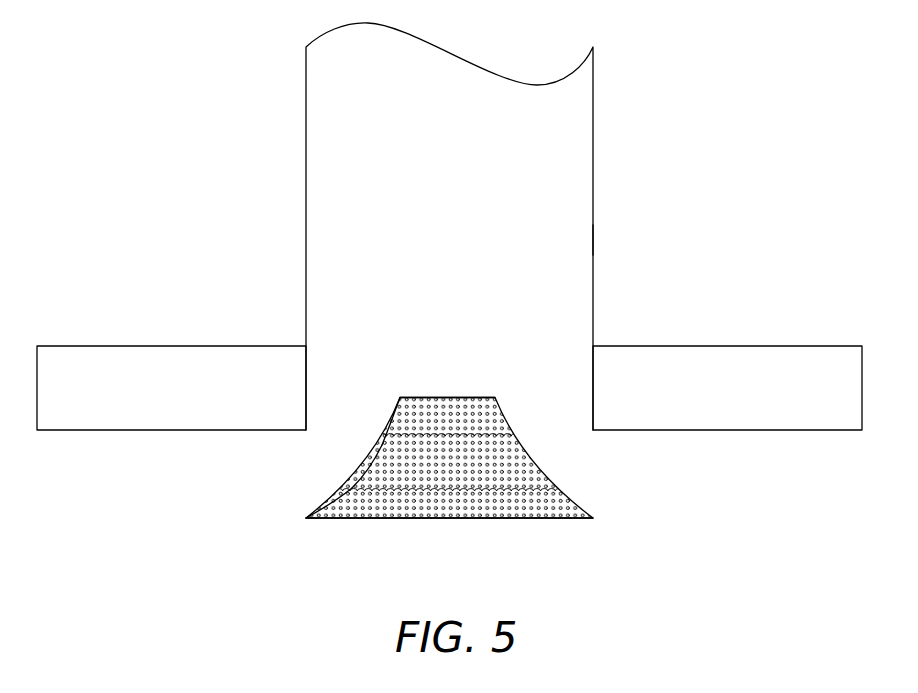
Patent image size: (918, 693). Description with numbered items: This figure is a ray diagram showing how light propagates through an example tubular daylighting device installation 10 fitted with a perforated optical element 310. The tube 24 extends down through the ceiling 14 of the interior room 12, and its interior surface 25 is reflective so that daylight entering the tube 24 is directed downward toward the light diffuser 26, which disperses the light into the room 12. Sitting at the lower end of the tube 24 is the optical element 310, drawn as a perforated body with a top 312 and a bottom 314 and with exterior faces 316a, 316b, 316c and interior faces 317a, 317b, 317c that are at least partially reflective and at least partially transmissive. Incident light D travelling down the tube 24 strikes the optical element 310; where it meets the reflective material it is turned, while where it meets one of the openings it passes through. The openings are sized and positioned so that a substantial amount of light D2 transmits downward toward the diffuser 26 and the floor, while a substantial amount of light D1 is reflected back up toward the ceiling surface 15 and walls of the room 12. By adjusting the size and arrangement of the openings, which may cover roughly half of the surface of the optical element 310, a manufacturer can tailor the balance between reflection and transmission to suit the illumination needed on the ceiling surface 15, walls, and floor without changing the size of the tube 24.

The heat exchanger assembly 10 is at (711, 230).
The interior room 12 is at (724, 585).
The ceiling 14 is at (763, 346).
The ceiling surface 15 is at (100, 440).
The tube 24 is at (593, 167).
The interior surface 25 is at (583, 243).
The light diffuser 26 is at (679, 477).
The optical element 310 is at (514, 476).
The top surface of insert 312 is at (448, 388).
The bottom surface of insert 314 is at (548, 530).
The exterior face 316a is at (390, 396).
The exterior face 316b is at (366, 441).
The exterior face 316c is at (320, 493).
The interior face 317a is at (483, 418).
The interior face 317b is at (512, 465).
The interior face 317c is at (550, 508).
The incident light D is at (306, 240).
The reflected light D1 is at (357, 472).
The transmitted light D2 is at (306, 240).